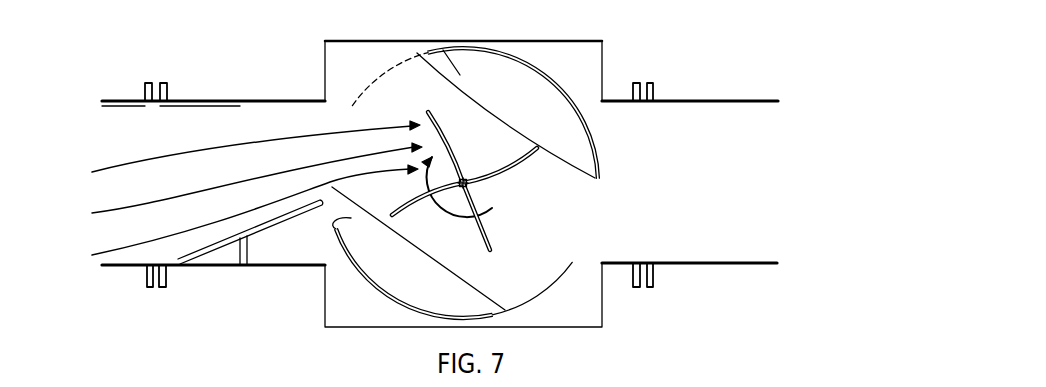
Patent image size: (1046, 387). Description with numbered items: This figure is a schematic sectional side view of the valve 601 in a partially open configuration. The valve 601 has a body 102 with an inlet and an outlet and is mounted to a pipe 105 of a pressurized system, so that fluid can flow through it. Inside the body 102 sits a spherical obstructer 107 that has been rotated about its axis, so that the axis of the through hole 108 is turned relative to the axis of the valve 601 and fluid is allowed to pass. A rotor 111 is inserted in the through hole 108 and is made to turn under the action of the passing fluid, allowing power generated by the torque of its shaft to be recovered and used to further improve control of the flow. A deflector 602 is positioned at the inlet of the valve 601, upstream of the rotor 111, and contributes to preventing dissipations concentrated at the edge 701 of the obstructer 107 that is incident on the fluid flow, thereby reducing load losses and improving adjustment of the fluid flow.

The body 102 is at (333, 280).
The pipe 105 is at (143, 270).
The spherical obstructer 107 is at (428, 50).
The through hole 108 is at (584, 237).
The rotor 111 is at (444, 121).
The valve 601 is at (617, 63).
The deflector 602 is at (306, 224).
The edge 701 is at (332, 188).